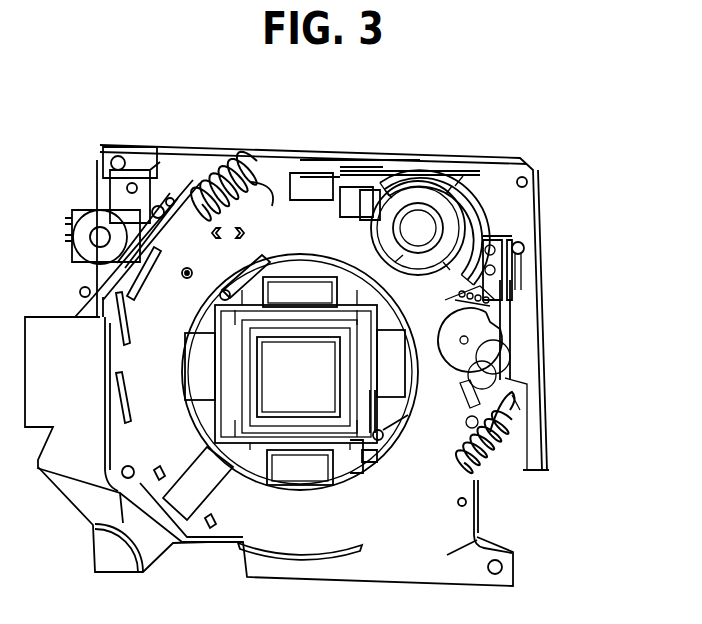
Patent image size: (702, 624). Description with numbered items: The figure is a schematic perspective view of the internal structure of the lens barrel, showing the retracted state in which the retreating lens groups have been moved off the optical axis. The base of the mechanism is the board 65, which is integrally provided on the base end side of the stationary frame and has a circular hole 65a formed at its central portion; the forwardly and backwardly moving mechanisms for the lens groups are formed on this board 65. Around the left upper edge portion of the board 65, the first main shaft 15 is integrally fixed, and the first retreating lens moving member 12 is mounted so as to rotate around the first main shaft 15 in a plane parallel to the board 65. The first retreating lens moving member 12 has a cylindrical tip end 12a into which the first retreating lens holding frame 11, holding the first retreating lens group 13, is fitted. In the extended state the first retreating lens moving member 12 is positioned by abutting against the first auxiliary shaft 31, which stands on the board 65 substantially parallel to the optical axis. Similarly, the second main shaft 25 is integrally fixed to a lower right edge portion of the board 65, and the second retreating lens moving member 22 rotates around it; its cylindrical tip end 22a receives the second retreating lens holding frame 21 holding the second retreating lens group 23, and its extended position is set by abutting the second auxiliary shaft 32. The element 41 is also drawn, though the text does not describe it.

The first retreating lens holding frame 11 is at (443, 222).
The first retreating lens moving member 12 is at (358, 170).
The cylindrical tip end 12a is at (448, 187).
The first retreating lens group 13 is at (407, 222).
The first main shaft 15 is at (207, 203).
The second retreating lens holding frame 21 is at (490, 207).
The second retreating lens moving member 22 is at (455, 295).
The cylindrical tip end 22a is at (512, 226).
The second retreating lens group 23 is at (510, 242).
The second main shaft 25 is at (477, 462).
The first auxiliary shaft 31 is at (222, 293).
The second auxiliary shaft 32 is at (390, 432).
The image sensor 41 is at (268, 357).
The board 65 is at (482, 538).
The circular hole 65a is at (302, 490).